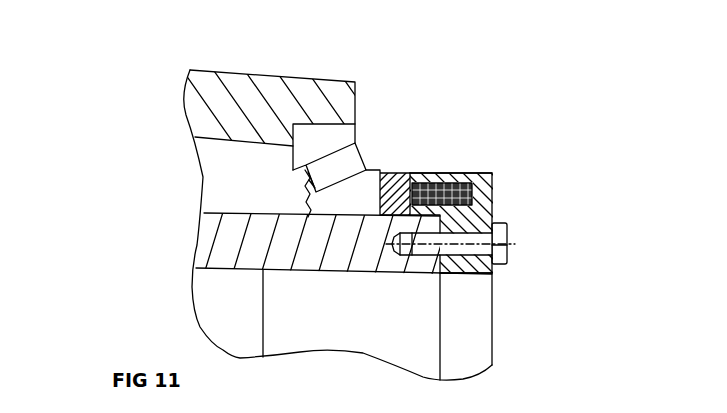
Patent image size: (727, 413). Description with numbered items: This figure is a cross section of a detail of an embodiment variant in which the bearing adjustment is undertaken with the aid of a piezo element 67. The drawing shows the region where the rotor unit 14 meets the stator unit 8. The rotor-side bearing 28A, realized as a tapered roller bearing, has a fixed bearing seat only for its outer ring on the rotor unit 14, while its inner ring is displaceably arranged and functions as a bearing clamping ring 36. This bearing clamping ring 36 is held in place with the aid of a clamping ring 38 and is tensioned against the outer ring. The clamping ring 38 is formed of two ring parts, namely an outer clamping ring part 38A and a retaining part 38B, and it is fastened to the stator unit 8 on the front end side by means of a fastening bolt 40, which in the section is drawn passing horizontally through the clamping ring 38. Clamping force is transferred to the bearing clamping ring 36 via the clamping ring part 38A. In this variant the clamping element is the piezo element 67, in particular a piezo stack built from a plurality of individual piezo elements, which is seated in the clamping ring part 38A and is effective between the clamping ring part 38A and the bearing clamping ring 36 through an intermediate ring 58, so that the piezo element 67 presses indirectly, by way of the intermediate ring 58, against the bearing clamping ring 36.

The stator unit 8 is at (203, 243).
The rotor unit 14 is at (200, 103).
The rotor-side bearing 28A is at (345, 167).
The bearing clamping ring 36 is at (362, 200).
The clamping ring 38 is at (477, 220).
The clamping ring part 38A is at (470, 172).
The retaining part 38B is at (480, 268).
The fastening bolt 40 is at (508, 244).
The intermediate ring 58 is at (401, 173).
The piezo element 67 is at (425, 175).